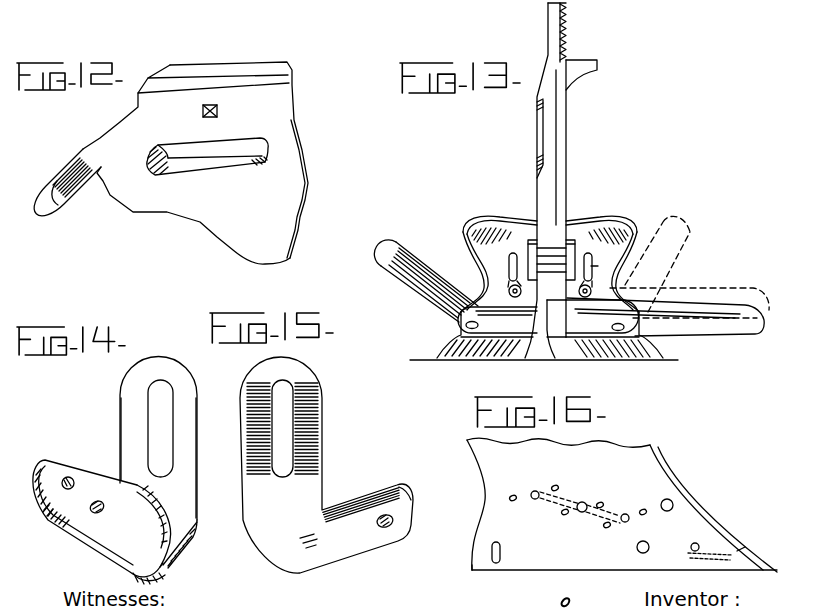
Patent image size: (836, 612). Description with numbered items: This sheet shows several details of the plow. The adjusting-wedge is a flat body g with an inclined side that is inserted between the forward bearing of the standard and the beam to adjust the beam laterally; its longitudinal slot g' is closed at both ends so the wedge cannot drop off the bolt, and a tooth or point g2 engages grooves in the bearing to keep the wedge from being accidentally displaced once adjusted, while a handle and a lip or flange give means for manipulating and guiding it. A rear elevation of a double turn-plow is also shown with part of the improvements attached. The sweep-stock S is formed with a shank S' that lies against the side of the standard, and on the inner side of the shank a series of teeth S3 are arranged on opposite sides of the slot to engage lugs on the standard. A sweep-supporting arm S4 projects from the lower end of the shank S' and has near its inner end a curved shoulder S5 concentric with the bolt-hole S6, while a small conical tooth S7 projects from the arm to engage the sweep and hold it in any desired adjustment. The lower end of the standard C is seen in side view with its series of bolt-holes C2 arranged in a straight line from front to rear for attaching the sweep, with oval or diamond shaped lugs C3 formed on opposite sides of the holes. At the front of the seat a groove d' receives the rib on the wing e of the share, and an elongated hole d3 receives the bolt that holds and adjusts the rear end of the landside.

In FIG. 12, the mounting plate g is at (195, 163).
In FIG. 12, the handle and slot of plate g' is at (173, 144).
In FIG. 12, the square opening g2 is at (217, 111).
In FIG. 14, the sweep-stock S is at (168, 463).
In FIG. 14, the shank S' is at (144, 457).
In FIG. 15, the teeth S3 is at (326, 465).
In FIG. 14, the sweep-supporting arm S4 is at (50, 458).
In FIG. 14, the curved shoulder S5 is at (165, 562).
In FIG. 14, the bolt-hole S6 is at (94, 512).
In FIG. 14, the conical tooth S7 is at (78, 484).
In FIG. 16, the curved flange C is at (713, 508).
In FIG. 16, the bolt-holes C2 is at (535, 499).
In FIG. 16, the lugs C3 is at (622, 504).
In FIG. 16, the groove d' is at (748, 541).
In FIG. 16, the elongated hole d3 is at (470, 568).
In FIG. 16, the wing e is at (706, 551).